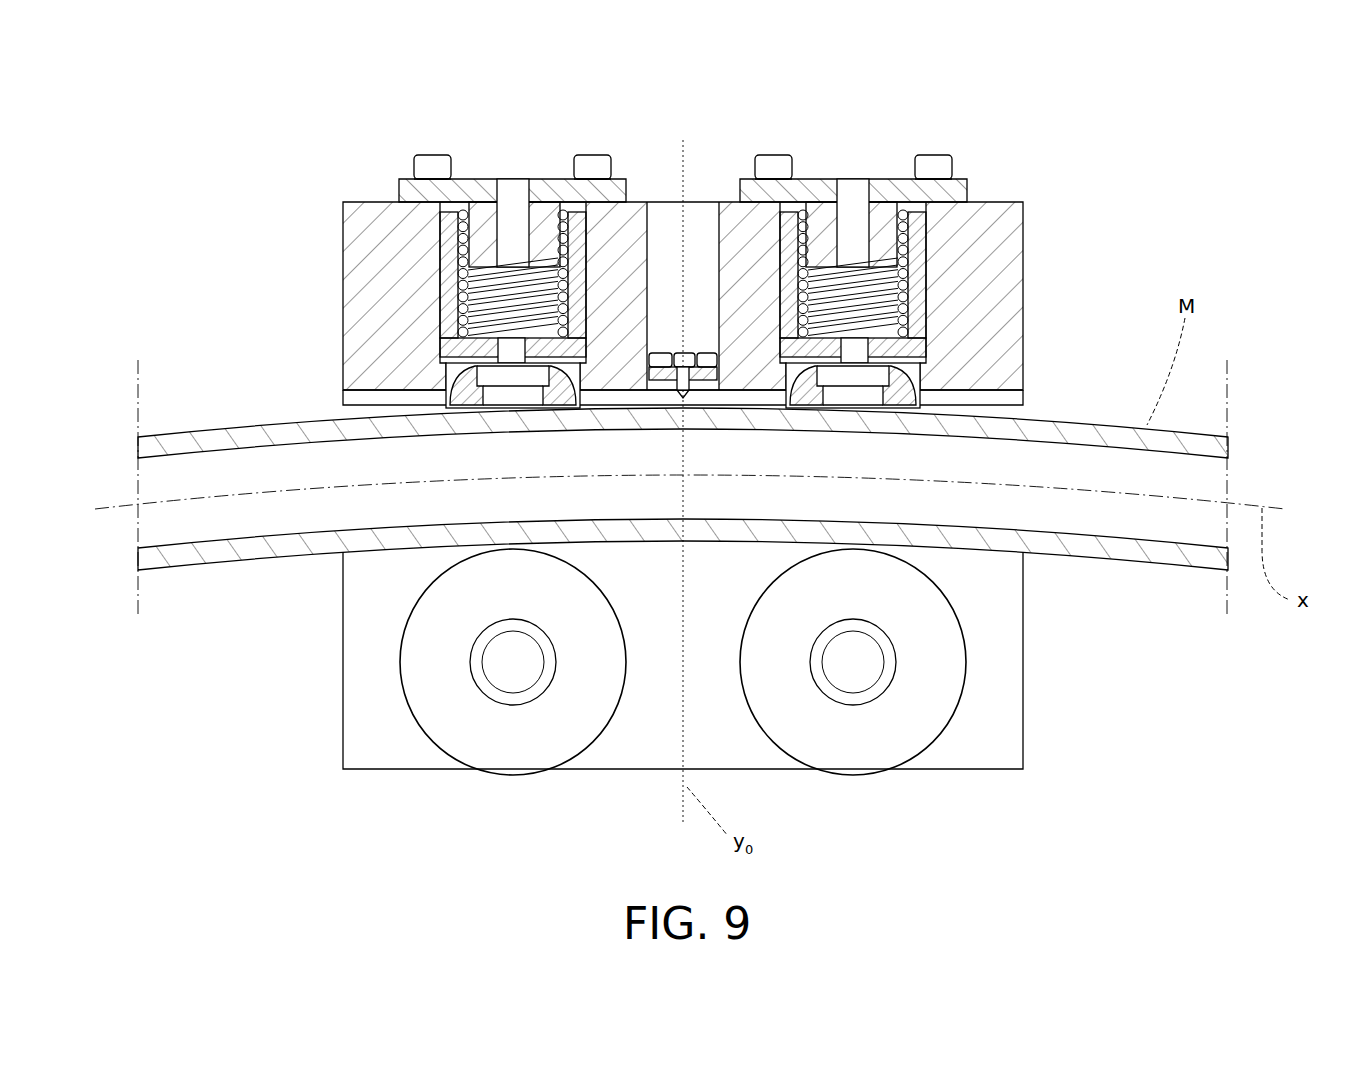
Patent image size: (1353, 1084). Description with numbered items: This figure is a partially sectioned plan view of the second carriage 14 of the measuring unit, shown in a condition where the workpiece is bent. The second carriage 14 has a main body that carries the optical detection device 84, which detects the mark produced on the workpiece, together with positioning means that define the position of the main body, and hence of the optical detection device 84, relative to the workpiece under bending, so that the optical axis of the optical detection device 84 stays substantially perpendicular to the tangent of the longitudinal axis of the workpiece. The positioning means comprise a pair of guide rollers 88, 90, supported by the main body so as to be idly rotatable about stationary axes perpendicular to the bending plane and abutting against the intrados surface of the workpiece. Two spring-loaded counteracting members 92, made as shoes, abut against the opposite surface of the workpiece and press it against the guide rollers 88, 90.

The second carriage 14 is at (1004, 194).
The optical detection device 84 is at (703, 352).
The spring-loaded counteracting member 92 is at (438, 380).
The guide roller 88 is at (452, 757).
The guide roller 90 is at (910, 757).